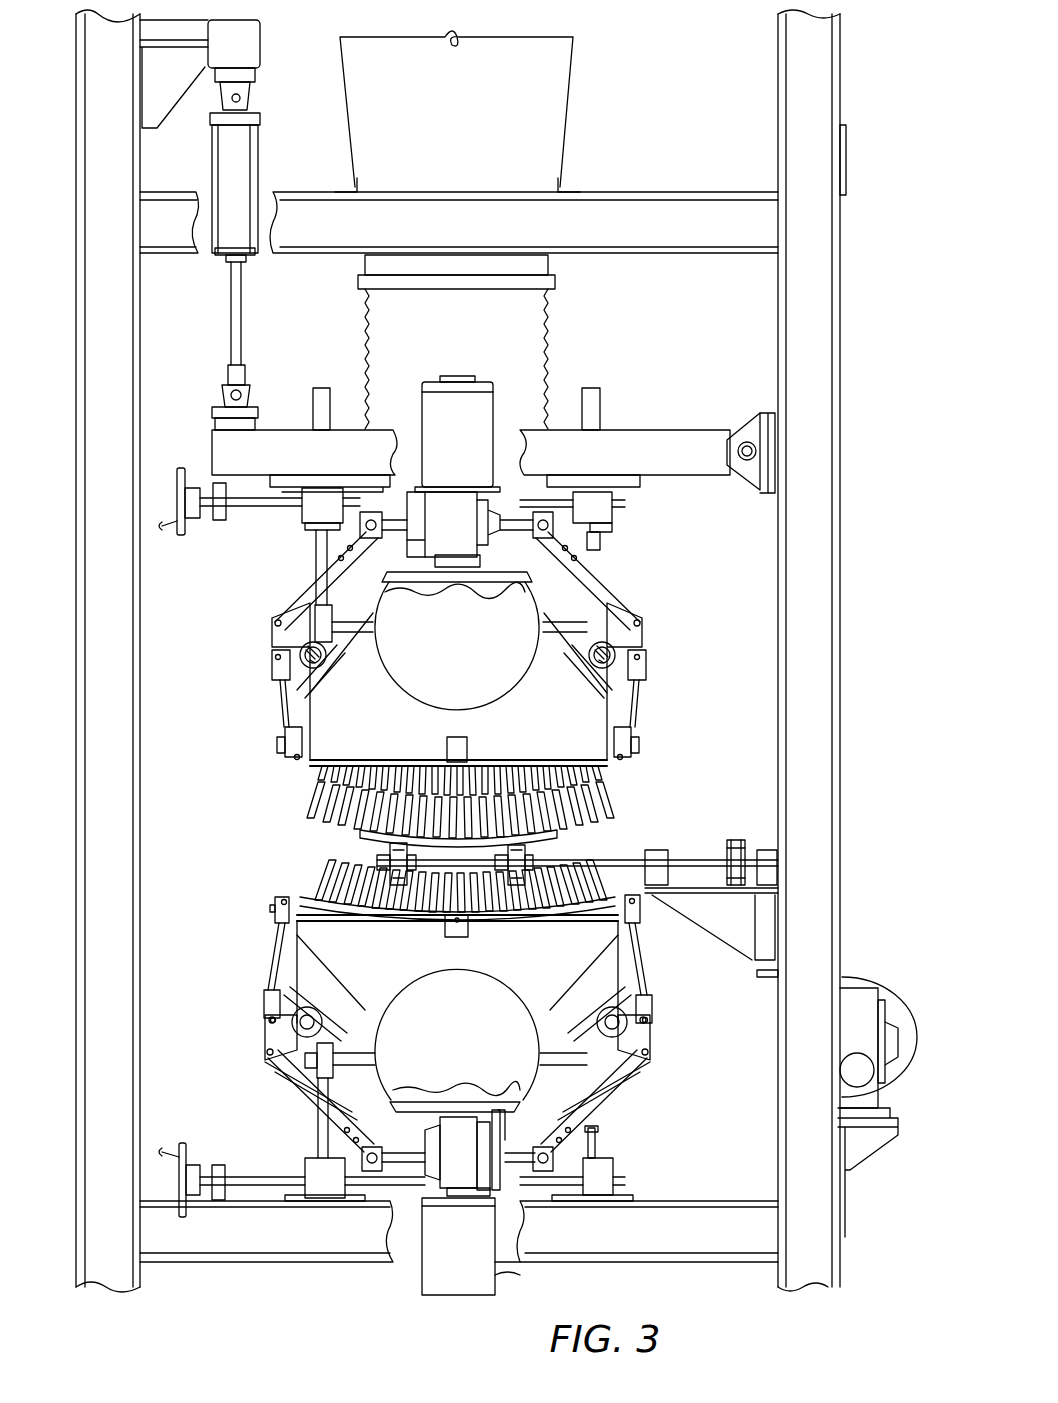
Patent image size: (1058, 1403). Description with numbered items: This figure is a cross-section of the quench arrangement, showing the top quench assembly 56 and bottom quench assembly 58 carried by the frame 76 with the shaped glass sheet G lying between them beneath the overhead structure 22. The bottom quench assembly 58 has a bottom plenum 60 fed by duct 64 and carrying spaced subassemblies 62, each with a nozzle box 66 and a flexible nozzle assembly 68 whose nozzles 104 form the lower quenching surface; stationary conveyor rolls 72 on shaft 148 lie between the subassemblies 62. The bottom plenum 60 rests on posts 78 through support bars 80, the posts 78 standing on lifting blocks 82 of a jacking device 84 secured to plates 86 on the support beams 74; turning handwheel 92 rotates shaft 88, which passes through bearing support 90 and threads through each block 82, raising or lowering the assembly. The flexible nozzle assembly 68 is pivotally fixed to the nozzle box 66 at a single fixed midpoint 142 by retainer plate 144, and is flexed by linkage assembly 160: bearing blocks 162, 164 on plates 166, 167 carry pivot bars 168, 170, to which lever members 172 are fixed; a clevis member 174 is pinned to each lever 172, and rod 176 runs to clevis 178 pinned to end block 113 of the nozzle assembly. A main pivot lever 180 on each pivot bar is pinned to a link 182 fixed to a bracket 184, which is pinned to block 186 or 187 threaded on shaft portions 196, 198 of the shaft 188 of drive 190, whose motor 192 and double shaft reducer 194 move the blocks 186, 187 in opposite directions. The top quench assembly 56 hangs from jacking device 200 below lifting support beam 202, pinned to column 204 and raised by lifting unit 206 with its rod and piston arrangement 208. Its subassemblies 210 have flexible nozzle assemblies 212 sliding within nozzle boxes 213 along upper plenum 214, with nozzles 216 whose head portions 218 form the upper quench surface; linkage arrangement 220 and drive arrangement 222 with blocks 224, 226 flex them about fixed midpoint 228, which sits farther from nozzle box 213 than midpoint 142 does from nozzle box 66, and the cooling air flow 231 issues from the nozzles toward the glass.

The hopper 22 is at (642, 102).
The top quench assembly 56 is at (655, 551).
The bottom quench assembly 58 is at (699, 1076).
The bottom plenum 60 is at (505, 1003).
The subassemblies 62 is at (290, 936).
The duct 64 is at (342, 1090).
The nozzle box 66 is at (620, 940).
The flexible nozzle assembly 68 is at (620, 888).
The stationary conveyor rolls 72 is at (708, 858).
The support beams 74 is at (722, 1200).
The frame 76 is at (140, 1040).
The posts 78 is at (318, 1120).
The support bars 80 is at (340, 1050).
The lifting blocks 82 is at (305, 1165).
The jacking device 84 is at (180, 1192).
The plates 86 is at (302, 1175).
The shaft 88 is at (250, 1188).
The bearing support 90 is at (216, 1200).
The handwheel 92 is at (182, 1140).
The nozzles 104 is at (280, 855).
The end blocks 113 is at (275, 898).
The fixed midpoint 142 is at (468, 925).
The retainer plate 144 is at (458, 939).
The shaft 148 is at (608, 862).
The linkage assembly 160 is at (670, 1010).
The bearing block 162 is at (645, 978).
The bearing block 164 is at (297, 998).
The plate 166 is at (635, 965).
The plate 167 is at (298, 985).
The pivot bar 168 is at (605, 1020).
The pivot bar 170 is at (310, 1020).
The lever members 172 is at (285, 1006).
The clevis member 174 is at (280, 1015).
The rod 176 is at (295, 945).
The clevis 178 is at (275, 903).
The main pivot lever 180 is at (653, 1040).
The link 182 is at (622, 1073).
The bracket 184 is at (557, 1128).
The block 186 is at (550, 1175).
The block 187 is at (376, 1173).
The shaft 188 is at (405, 1162).
The drive 190 is at (520, 1268).
The motor 192 is at (422, 1295).
The reducer 194 is at (490, 1195).
The shaft portion 196 is at (587, 1170).
The shaft portion 198 is at (346, 1165).
The jacking device 200 is at (185, 540).
The lifting support beam 202 is at (636, 430).
The column 204 is at (776, 292).
The lifting unit 206 is at (202, 275).
The rod and piston arrangement 208 is at (260, 142).
The subassemblies 210 is at (618, 705).
The flexible nozzle assemblies 212 is at (590, 775).
The nozzle boxes 213 is at (307, 705).
The upper plenum 214 is at (545, 591).
The nozzles 216 is at (592, 790).
The head portions 218 is at (602, 820).
The linkage arrangement 220 is at (280, 599).
The drive arrangement 222 is at (468, 380).
The block 224 is at (547, 510).
The block 226 is at (370, 500).
The fixed midpoint 228 is at (457, 790).
The material flow 231 is at (346, 753).
The glass sheet G is at (313, 848).